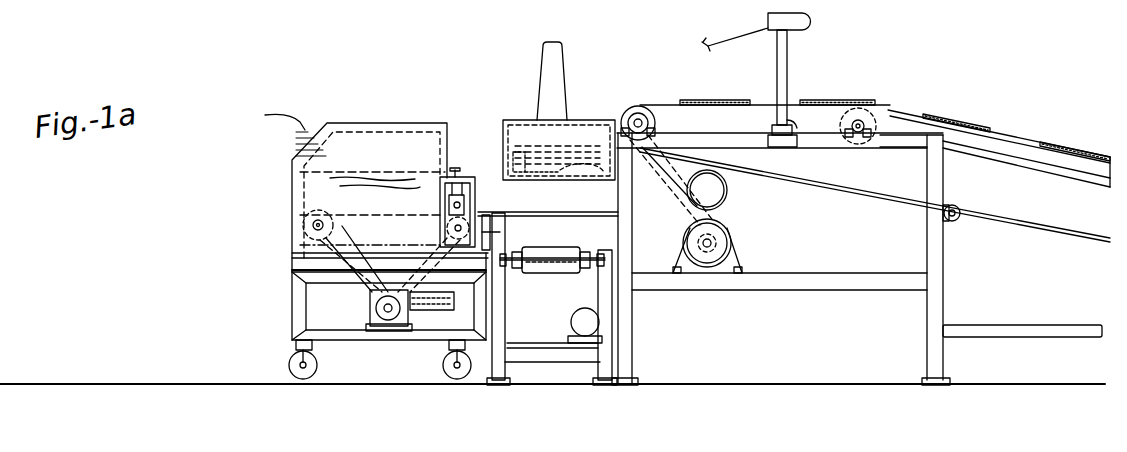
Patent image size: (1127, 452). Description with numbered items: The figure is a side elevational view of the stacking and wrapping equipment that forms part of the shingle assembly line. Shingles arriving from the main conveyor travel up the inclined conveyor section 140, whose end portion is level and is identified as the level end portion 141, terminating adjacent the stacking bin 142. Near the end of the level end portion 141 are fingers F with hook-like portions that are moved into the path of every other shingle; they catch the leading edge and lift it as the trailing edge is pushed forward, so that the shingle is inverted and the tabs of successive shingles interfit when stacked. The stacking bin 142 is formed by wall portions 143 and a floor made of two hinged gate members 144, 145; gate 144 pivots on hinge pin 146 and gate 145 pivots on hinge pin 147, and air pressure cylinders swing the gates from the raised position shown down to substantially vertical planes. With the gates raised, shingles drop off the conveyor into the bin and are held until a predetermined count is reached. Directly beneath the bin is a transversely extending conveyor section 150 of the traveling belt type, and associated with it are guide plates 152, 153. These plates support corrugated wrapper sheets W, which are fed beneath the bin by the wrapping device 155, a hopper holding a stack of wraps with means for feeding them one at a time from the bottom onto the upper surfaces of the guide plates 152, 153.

The inclined conveyor section 140 is at (1018, 130).
The level end portion 141 is at (810, 74).
The stacking bin 142 is at (607, 88).
The wall portions 143 is at (508, 120).
The hinged gate member 144 is at (535, 177).
The hinged gate member 145 is at (572, 177).
The hinge pin 146 is at (520, 164).
The hinge pin 147 is at (643, 148).
The transversely extending conveyor section 150 is at (570, 278).
The guide plate 152 is at (505, 251).
The guide plate 153 is at (618, 236).
The wrapping device 155 is at (384, 112).
The corrugated wrapper sheets W is at (273, 117).
The fingers F is at (719, 28).